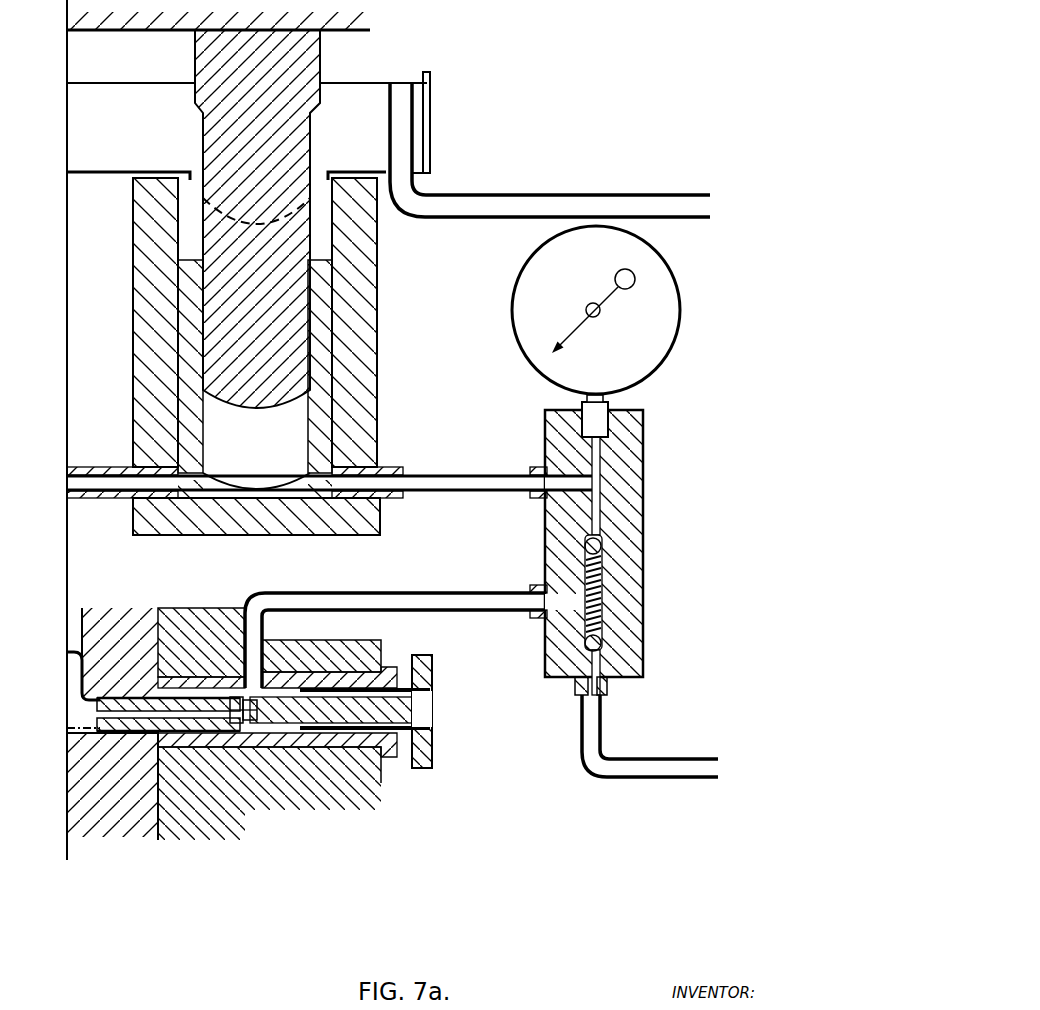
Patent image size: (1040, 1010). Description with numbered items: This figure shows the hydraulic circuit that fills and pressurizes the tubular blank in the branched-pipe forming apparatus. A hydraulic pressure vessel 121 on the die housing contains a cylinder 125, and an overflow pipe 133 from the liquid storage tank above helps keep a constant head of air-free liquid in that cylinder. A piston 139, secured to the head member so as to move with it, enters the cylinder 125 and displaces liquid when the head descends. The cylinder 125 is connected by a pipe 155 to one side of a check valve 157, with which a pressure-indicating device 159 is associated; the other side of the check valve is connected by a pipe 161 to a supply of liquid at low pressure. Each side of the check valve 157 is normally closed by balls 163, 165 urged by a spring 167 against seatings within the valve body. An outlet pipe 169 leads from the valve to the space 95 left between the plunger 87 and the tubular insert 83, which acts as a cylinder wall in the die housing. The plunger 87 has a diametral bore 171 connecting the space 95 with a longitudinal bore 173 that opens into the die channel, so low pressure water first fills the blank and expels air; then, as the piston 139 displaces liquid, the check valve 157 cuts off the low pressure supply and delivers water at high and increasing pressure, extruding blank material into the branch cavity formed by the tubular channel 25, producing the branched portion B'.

The tubular channel 25 is at (97, 617).
The tubular insert 83 is at (353, 743).
The plunger 87 is at (287, 707).
The space 95 is at (278, 735).
The hydraulic pressure vessel 121 is at (367, 316).
The cylinder 125 is at (322, 373).
The overflow pipe 133 is at (493, 193).
The piston 139 is at (287, 287).
The pipe 155 is at (458, 472).
The check valve 157 is at (630, 490).
The pressure-indicating device 159 is at (641, 360).
The pipe 161 is at (580, 744).
The ball 163 is at (601, 545).
The ball 165 is at (601, 648).
The spring 167 is at (597, 605).
The outlet pipe 169 is at (463, 613).
The diametral bore 171 is at (237, 733).
The longitudinal bore 173 is at (175, 712).
The bracket B' is at (56, 690).